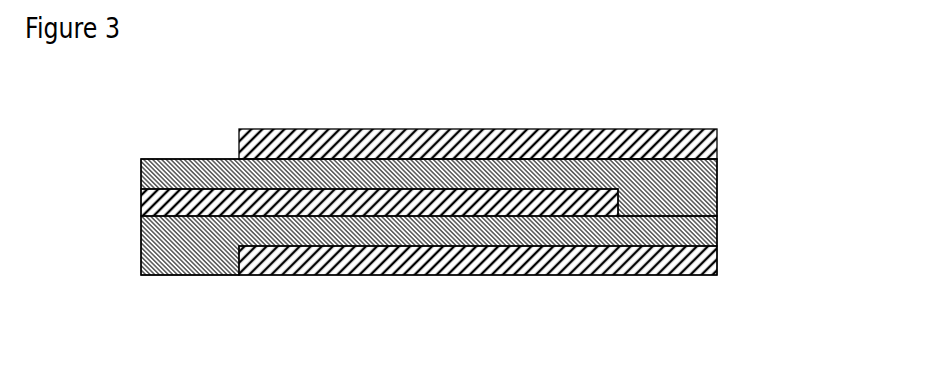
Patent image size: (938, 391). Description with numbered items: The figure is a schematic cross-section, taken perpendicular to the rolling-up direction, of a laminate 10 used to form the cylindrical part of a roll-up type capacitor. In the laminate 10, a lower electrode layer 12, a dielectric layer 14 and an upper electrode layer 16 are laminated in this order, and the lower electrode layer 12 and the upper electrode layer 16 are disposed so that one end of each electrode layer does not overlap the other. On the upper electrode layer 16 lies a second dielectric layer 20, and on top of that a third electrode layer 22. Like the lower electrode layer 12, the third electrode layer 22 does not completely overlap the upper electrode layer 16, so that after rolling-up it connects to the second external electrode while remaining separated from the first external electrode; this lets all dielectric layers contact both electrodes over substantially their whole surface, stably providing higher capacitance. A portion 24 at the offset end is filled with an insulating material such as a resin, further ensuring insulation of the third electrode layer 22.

The laminate 10 is at (128, 160).
The lower electrode layer 12 is at (718, 264).
The dielectric layer 14 is at (712, 235).
The upper electrode layer 16 is at (225, 203).
The second dielectric layer 20 is at (672, 177).
The third electrode layer 22 is at (468, 140).
The portion 24 is at (235, 130).